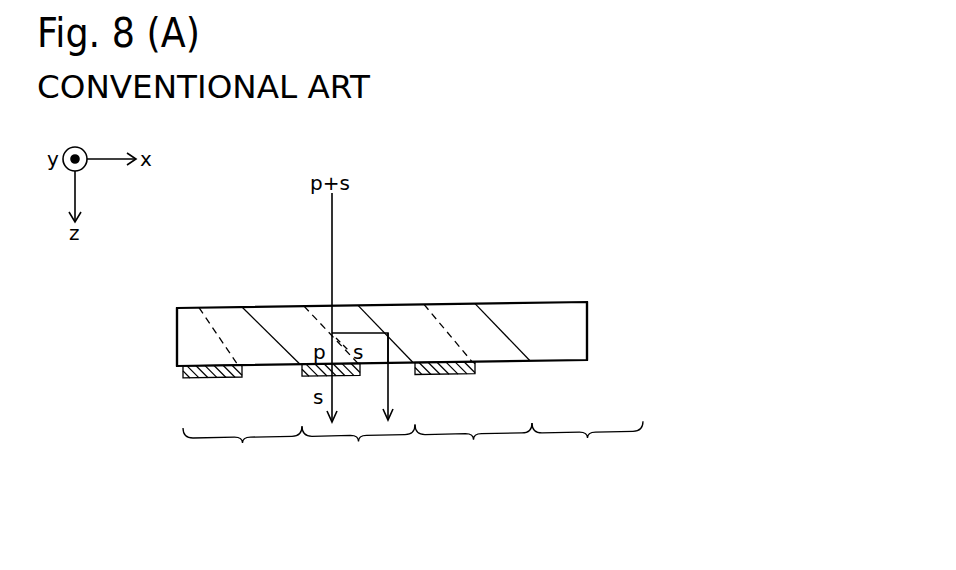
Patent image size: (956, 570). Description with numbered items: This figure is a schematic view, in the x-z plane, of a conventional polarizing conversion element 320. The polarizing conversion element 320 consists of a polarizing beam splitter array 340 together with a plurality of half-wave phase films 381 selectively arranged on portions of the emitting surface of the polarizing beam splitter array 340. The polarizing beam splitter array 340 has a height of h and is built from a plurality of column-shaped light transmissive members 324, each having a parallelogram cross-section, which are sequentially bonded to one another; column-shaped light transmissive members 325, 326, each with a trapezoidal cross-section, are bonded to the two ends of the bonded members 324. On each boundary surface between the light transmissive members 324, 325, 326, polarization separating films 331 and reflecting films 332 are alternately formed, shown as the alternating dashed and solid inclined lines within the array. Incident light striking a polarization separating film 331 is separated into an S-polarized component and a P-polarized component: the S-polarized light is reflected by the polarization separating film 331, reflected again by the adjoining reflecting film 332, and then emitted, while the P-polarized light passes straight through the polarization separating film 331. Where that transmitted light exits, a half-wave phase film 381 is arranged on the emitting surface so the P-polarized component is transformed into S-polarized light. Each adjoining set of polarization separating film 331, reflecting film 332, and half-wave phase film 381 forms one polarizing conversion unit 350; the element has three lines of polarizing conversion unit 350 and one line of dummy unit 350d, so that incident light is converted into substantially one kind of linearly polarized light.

The polarizing conversion element 320 is at (622, 172).
The column-shaped light transmissive member 324 is at (336, 265).
The column-shaped light transmissive member 325 is at (185, 333).
The column-shaped light transmissive member 326 is at (563, 317).
The polarization separating film 331 is at (302, 312).
The reflecting film 332 is at (371, 312).
The polarizing beam splitter array 340 is at (598, 330).
The polarizing conversion unit 350 is at (357, 473).
The dummy unit 350d is at (590, 471).
The λ/2 phase film 381 is at (202, 378).